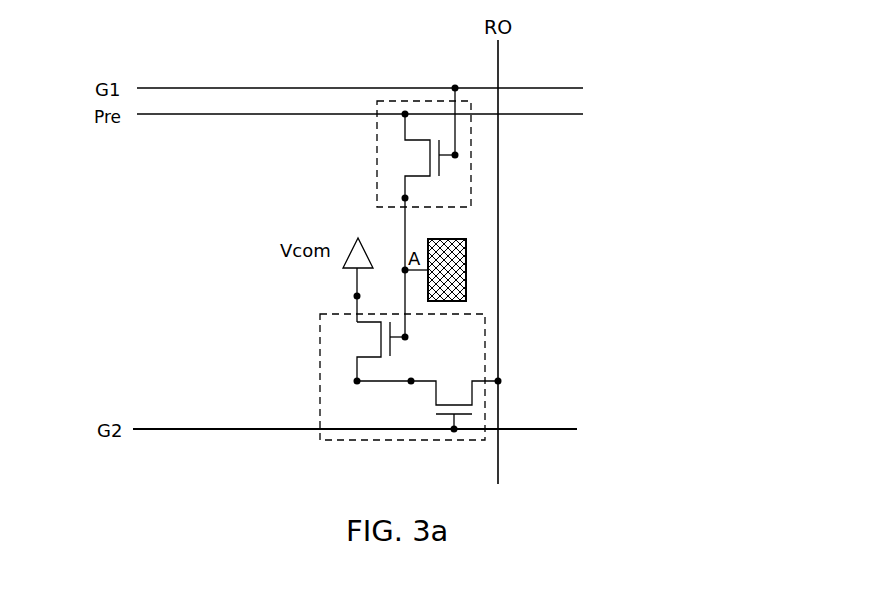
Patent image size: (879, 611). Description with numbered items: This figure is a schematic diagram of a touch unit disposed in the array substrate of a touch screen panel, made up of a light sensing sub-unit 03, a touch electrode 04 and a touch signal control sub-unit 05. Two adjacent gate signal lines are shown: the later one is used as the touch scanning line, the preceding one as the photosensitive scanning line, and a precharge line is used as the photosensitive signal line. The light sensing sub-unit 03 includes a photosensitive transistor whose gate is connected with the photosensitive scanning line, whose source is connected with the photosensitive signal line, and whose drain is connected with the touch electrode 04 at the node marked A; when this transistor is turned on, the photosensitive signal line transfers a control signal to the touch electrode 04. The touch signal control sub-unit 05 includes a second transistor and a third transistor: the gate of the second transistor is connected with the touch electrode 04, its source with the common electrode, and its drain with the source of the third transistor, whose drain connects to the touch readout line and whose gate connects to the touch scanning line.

The light sensing sub-unit 03 is at (395, 101).
The touch electrode 04 is at (466, 260).
The touch signal control sub-unit 05 is at (485, 345).